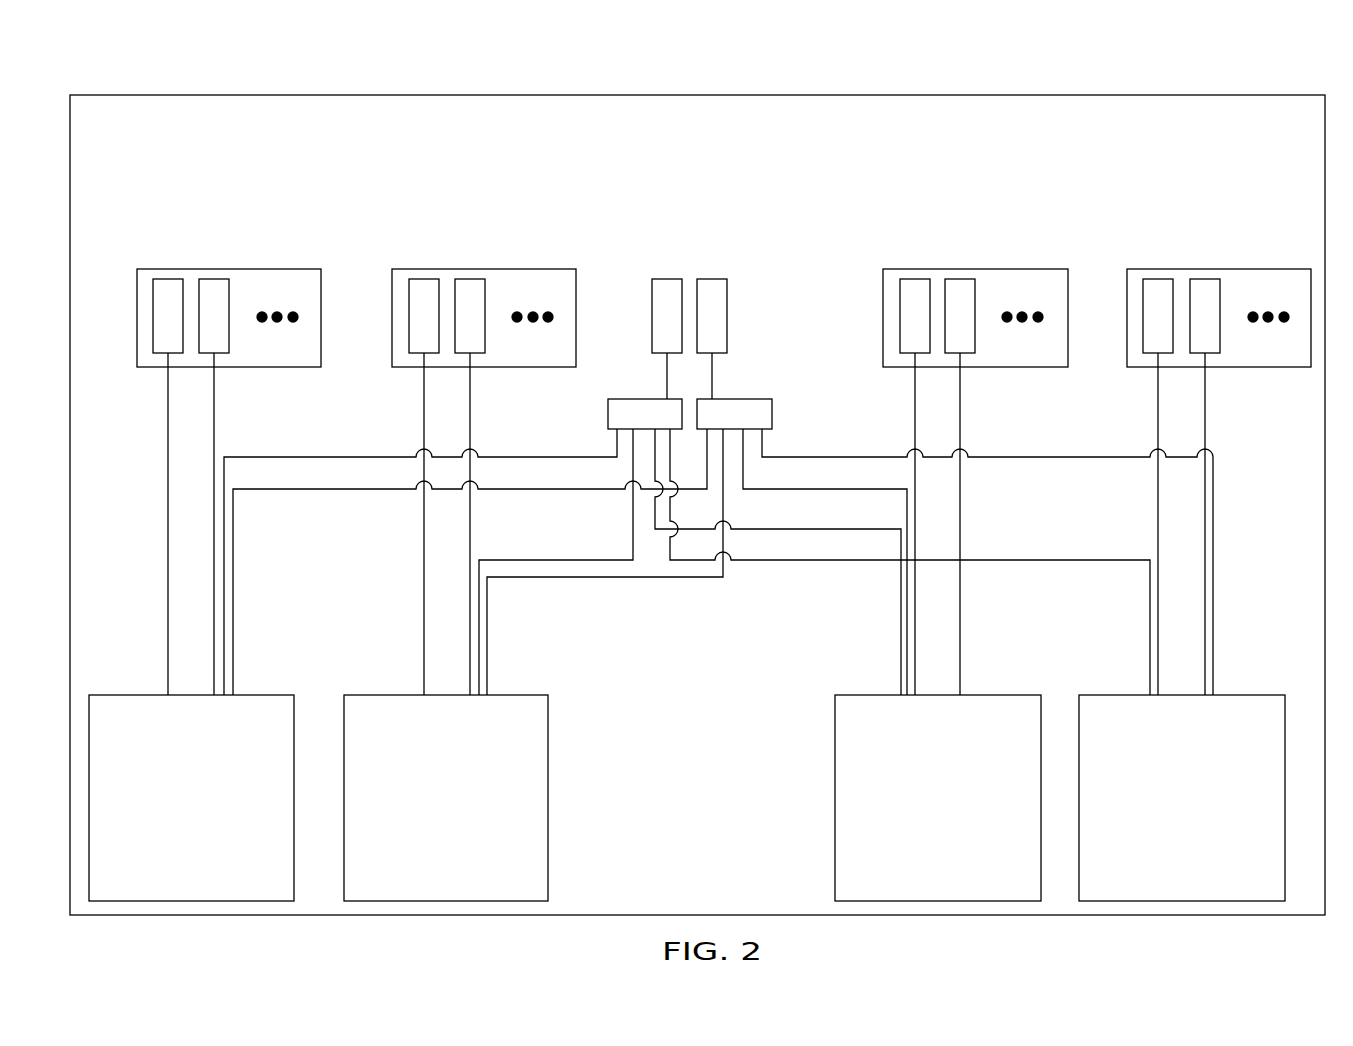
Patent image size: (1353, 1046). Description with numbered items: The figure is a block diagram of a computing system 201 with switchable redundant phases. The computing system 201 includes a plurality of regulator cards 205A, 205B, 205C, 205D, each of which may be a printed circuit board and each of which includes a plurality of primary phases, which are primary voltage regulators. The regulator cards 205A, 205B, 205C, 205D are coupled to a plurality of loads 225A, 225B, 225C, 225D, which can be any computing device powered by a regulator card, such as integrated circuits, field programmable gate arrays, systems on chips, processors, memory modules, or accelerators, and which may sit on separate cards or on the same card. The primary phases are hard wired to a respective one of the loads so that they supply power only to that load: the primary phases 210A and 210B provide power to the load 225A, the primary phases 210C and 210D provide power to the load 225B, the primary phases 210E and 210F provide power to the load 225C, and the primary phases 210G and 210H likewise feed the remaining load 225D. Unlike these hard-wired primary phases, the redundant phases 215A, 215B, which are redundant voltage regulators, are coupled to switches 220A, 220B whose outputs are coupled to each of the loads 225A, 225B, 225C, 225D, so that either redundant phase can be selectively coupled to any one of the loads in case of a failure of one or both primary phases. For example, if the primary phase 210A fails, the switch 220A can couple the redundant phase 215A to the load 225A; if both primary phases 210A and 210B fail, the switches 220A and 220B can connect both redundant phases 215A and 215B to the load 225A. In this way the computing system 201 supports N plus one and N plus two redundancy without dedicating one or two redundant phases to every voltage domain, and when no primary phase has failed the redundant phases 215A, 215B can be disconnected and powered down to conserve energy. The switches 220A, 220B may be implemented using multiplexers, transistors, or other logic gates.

The computing system 201 is at (423, 89).
The regulator card 205A is at (1258, 367).
The regulator card 205B is at (1005, 367).
The regulator card 205C is at (576, 347).
The regulator card 205D is at (255, 367).
The primary phase 210A is at (166, 279).
The primary phase 210B is at (214, 279).
The primary phase 210C is at (421, 279).
The primary phase 210D is at (470, 279).
The primary phase 210E is at (913, 279).
The primary phase 210F is at (960, 279).
The primary phase 210G is at (1156, 279).
The primary phase 210H is at (1205, 279).
The redundant phase 215A is at (665, 279).
The redundant phase 215B is at (711, 279).
The switch 220A is at (608, 416).
The switch 220B is at (772, 413).
The load 225A is at (172, 818).
The load 225B is at (425, 818).
The load 225C is at (919, 818).
The load 225D is at (1162, 818).